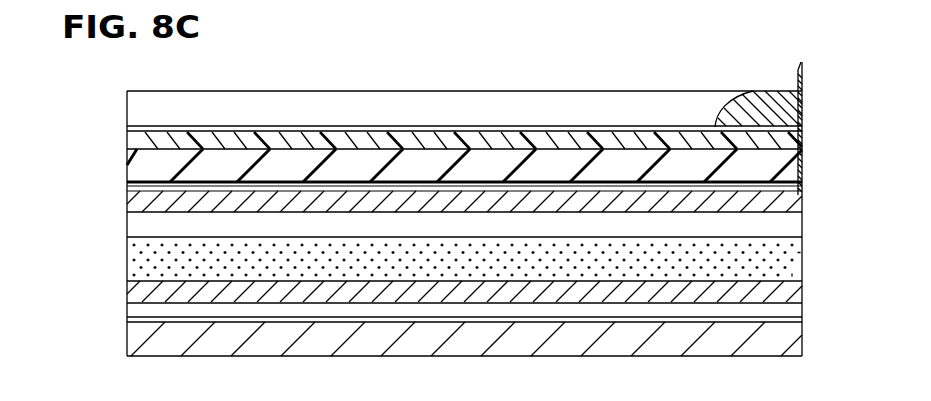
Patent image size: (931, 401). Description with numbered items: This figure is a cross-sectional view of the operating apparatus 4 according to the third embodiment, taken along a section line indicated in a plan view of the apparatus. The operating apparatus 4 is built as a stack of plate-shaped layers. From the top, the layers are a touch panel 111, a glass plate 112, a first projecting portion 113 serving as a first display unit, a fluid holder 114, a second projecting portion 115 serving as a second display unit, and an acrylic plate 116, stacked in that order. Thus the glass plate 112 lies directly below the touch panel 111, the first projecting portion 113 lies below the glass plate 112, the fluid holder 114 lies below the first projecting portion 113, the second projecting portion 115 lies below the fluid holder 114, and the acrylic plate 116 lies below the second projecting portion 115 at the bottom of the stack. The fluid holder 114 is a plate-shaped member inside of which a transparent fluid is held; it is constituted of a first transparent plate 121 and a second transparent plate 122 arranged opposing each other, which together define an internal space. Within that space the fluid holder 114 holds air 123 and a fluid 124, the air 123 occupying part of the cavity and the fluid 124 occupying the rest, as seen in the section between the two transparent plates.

The operating apparatus 4 is at (670, 66).
The touch panel 111 is at (127, 141).
The glass plate 112 is at (128, 158).
The first projecting portion 113 is at (127, 182).
The fluid holder 114 is at (464, 249).
The second projecting portion 115 is at (127, 317).
The acrylic plate 116 is at (140, 332).
The first transparent plate 121 is at (791, 204).
The second transparent plate 122 is at (791, 292).
The air 123 is at (791, 230).
The fluid 124 is at (791, 258).